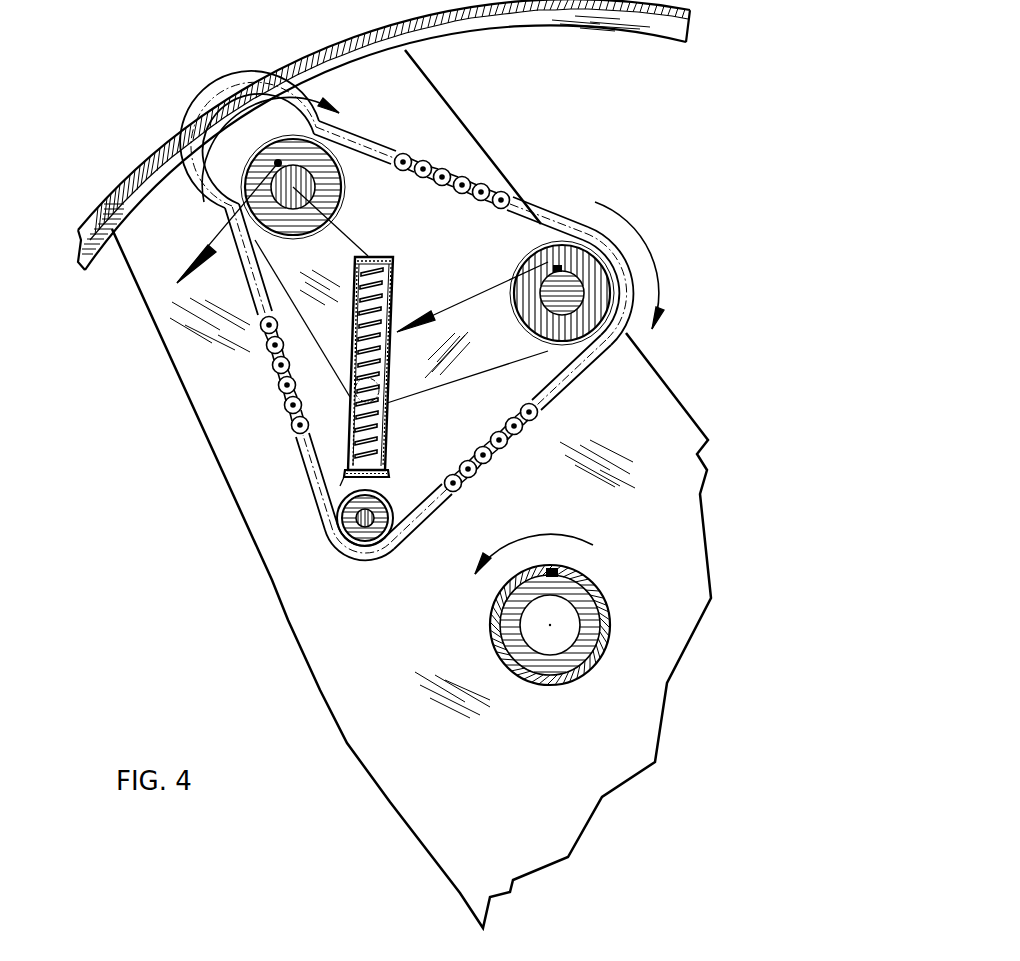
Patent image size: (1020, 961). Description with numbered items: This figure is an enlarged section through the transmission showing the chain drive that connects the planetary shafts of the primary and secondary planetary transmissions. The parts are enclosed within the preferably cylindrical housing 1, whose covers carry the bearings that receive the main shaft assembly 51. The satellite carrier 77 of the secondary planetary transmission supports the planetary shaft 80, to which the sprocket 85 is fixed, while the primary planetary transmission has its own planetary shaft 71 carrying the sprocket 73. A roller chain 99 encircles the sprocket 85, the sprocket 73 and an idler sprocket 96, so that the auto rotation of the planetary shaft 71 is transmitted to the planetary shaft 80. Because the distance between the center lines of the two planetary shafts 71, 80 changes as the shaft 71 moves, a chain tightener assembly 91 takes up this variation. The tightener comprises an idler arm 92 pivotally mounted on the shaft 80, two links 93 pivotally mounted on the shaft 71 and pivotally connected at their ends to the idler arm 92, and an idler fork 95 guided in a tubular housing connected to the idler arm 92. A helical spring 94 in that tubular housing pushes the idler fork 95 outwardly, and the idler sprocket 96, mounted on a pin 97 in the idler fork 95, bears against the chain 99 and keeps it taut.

The housing 1 is at (180, 135).
The satellite carrier 77 is at (452, 113).
The planetary shaft 80 is at (290, 187).
The sprocket 85 is at (365, 186).
The sprocket 73 is at (540, 250).
The planetary shaft 71 is at (550, 294).
The helical spring 94 is at (393, 297).
The idler arm 92 is at (343, 347).
The links 93 is at (447, 382).
The chain tightener assembly 91 is at (386, 445).
The idler sprocket 96 is at (352, 486).
The idler fork 95 is at (389, 473).
The pin 97 is at (352, 521).
The chain 99 is at (503, 442).
The main shaft assembly 51 is at (577, 665).